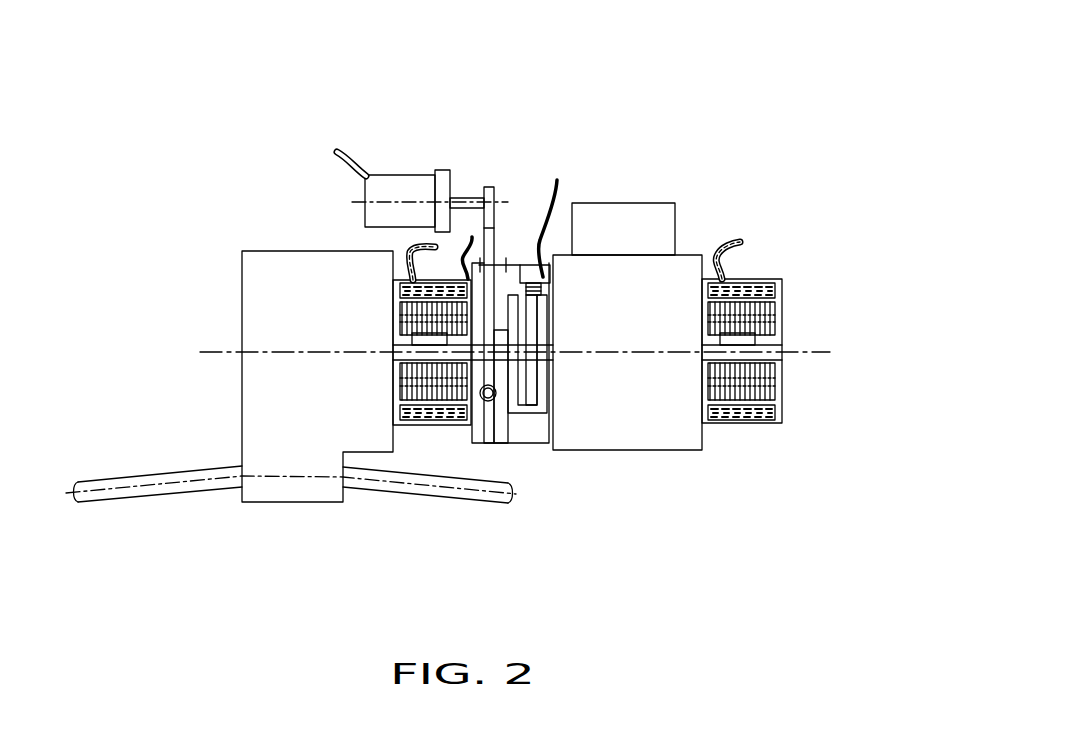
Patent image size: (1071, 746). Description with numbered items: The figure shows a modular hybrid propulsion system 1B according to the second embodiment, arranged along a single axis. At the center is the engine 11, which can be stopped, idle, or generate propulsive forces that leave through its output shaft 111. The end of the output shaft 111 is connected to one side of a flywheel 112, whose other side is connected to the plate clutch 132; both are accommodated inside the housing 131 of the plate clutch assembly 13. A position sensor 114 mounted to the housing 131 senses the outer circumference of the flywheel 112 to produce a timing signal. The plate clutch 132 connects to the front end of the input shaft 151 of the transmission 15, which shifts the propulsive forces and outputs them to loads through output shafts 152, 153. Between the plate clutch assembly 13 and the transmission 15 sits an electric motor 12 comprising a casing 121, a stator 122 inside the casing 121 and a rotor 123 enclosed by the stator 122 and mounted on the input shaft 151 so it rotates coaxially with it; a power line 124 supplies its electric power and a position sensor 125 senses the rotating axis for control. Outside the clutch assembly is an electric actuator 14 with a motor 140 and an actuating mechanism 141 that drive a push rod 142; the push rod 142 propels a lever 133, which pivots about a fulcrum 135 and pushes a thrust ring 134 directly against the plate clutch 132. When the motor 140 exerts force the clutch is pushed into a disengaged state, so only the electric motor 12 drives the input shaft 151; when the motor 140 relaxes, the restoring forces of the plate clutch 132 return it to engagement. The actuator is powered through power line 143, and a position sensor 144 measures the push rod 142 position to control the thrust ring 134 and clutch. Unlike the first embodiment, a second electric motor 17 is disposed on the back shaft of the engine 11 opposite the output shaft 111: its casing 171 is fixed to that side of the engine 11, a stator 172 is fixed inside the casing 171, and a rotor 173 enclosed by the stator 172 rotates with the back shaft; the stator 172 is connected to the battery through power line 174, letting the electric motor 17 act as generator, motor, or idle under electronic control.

The modular hybrid propulsion system 1B is at (681, 88).
The engine 11 is at (647, 327).
The output shaft 111 is at (547, 355).
The flywheel 112 is at (537, 385).
The position sensor 114 is at (533, 273).
The electric motor 12 is at (383, 349).
The casing 121 is at (405, 421).
The stator 122 is at (430, 421).
The rotor 123 is at (445, 392).
The power line 124 is at (452, 282).
The position sensor 125 is at (405, 250).
The plate clutch assembly 13 is at (642, 367).
The housing 131 is at (518, 418).
The plate clutch 132 is at (514, 300).
The lever 133 is at (510, 300).
The thrust ring 134 is at (500, 372).
The fulcrum 135 is at (480, 445).
The electric actuator 14 is at (450, 239).
The motor 140 is at (383, 190).
The actuating mechanism 141 is at (443, 169).
The push rod 142 is at (491, 187).
The power line 143 is at (340, 148).
The position sensor 144 is at (488, 237).
The transmission 15 is at (232, 279).
The input shaft 151 is at (393, 344).
The output shaft 152 is at (488, 402).
The output shaft 153 is at (135, 493).
The electric motor 17 is at (783, 335).
The casing 171 is at (755, 423).
The stator 172 is at (762, 413).
The rotor 173 is at (748, 385).
The power line 174 is at (736, 246).